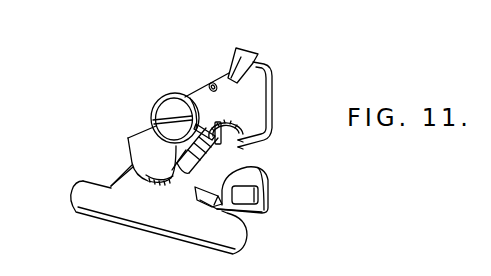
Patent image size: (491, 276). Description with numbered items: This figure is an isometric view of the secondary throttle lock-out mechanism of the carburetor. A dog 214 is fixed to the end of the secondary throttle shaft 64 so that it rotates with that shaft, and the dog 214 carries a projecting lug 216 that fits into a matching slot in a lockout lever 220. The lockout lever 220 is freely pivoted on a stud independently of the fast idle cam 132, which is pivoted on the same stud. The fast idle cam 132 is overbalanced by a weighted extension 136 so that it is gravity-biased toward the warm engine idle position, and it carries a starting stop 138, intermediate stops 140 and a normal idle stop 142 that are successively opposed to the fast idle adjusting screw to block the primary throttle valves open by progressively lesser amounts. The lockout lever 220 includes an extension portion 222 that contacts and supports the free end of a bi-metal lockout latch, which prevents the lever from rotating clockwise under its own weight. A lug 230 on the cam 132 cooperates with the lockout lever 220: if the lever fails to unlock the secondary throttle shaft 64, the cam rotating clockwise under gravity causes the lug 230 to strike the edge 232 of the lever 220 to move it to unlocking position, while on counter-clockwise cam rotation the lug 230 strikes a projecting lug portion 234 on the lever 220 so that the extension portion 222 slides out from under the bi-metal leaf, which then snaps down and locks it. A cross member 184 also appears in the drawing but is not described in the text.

The secondary throttle shaft 64 is at (259, 200).
The fast idle cam 132 is at (178, 93).
The extension 136 is at (262, 92).
The starting stop 138 is at (127, 152).
The intermediate stops 140 is at (142, 185).
The normal idle stop 142 is at (163, 188).
The cross bar 184 is at (160, 110).
The dog 214 is at (264, 183).
The projecting lug 216 is at (208, 206).
The lockout lever 220 is at (134, 219).
The extension portion 222 is at (237, 51).
The lug 230 is at (223, 151).
The edge 232 is at (187, 188).
The projecting lug portion 234 is at (245, 150).